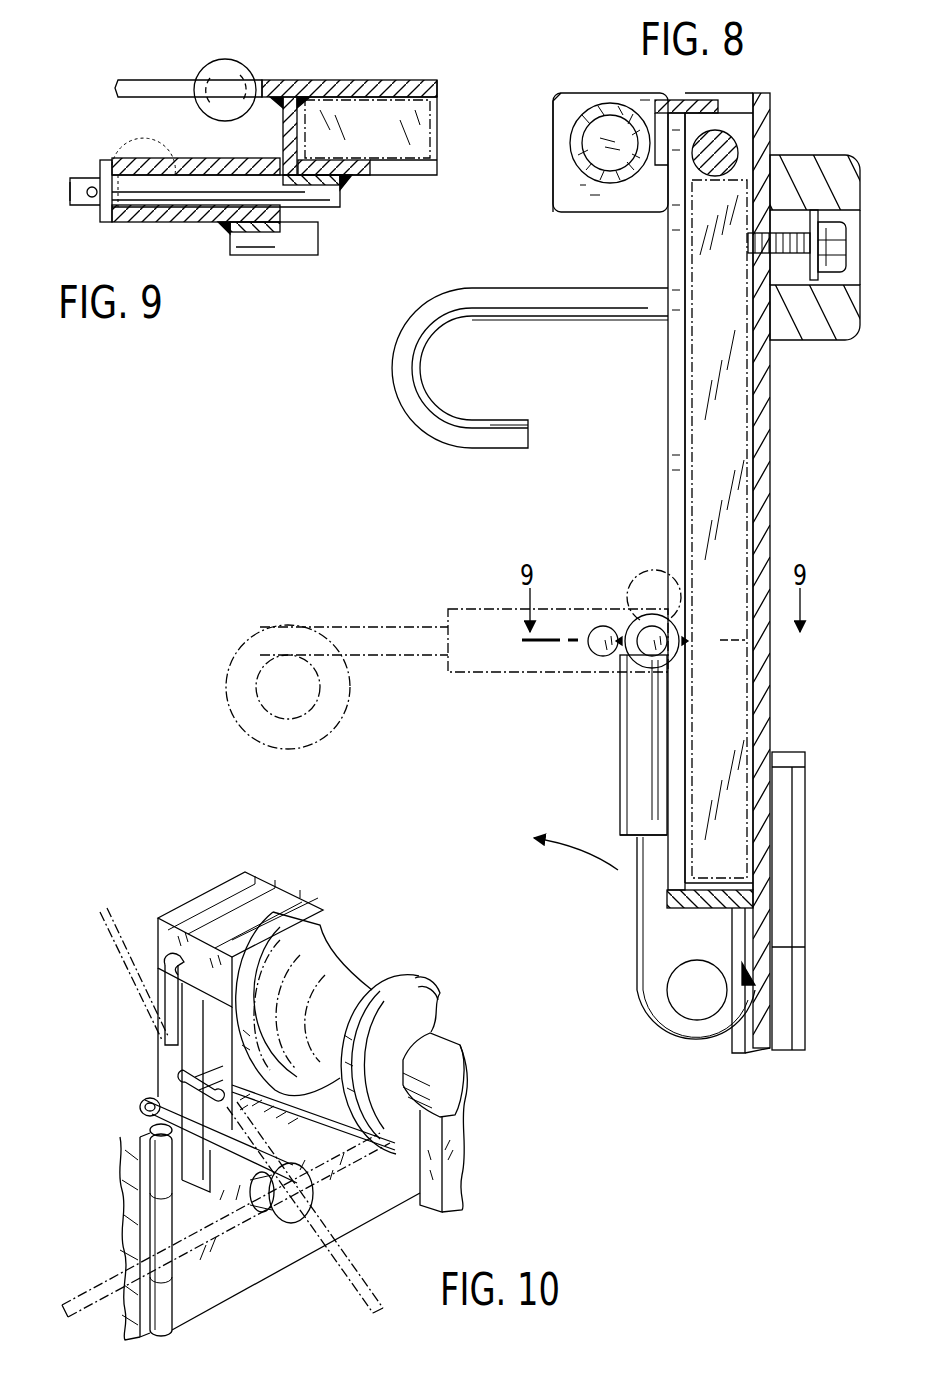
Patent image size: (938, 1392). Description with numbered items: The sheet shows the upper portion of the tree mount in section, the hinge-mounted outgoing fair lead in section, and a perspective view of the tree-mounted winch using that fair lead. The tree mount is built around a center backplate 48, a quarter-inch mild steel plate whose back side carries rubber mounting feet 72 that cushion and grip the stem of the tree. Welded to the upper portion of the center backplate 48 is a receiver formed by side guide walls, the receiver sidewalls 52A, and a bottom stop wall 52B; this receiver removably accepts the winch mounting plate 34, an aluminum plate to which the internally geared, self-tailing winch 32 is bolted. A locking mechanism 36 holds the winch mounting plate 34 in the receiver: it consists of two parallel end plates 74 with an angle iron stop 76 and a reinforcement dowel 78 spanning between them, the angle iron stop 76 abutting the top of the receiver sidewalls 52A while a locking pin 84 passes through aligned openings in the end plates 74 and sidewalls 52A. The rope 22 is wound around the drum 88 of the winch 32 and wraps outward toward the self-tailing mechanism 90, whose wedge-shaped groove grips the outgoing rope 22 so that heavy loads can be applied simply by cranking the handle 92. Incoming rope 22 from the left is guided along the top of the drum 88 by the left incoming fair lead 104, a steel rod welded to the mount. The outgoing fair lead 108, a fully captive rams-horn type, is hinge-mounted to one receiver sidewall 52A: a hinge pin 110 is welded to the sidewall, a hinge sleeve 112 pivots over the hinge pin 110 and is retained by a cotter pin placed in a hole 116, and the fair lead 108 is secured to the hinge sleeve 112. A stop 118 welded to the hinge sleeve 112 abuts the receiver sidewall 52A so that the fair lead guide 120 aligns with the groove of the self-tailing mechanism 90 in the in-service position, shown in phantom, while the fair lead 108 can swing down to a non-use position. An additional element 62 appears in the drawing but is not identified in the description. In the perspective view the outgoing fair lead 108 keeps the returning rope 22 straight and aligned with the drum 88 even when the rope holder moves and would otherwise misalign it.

In FIG. 10, the rope 22 is at (133, 993).
In FIG. 10, the winch 32 is at (347, 993).
In FIG. 9, the winch mounting plate 34 is at (360, 112).
In FIG. 8, the winch mounting plate 34 is at (735, 395).
In FIG. 8, the locking mechanism 36 is at (562, 112).
In FIG. 10, the locking mechanism 36 is at (220, 890).
In FIG. 9, the center backplate 48 is at (328, 83).
In FIG. 8, the center backplate 48 is at (763, 462).
In FIG. 10, the center backplate 48 is at (262, 1265).
In FIG. 9, the receiver sidewalls 52A is at (287, 133).
In FIG. 8, the receiver sidewalls 52A is at (678, 232).
In FIG. 8, the bottom stop wall 52B is at (720, 897).
In FIG. 9, the rod 62 is at (225, 62).
In FIG. 10, the rod 62 is at (170, 1333).
In FIG. 8, the rubber mounting feet 72 is at (840, 185).
In FIG. 8, the end plates 74 is at (565, 197).
In FIG. 8, the angle iron stop 76 is at (680, 108).
In FIG. 8, the reinforcement dowel 78 is at (617, 180).
In FIG. 8, the locking pin 84 is at (718, 156).
In FIG. 10, the drum 88 is at (363, 993).
In FIG. 10, the self-tailing mechanism 90 is at (413, 980).
In FIG. 10, the handle 92 is at (452, 1157).
In FIG. 8, the left incoming fair lead 104 is at (407, 356).
In FIG. 9, the outgoing fair lead 108 is at (125, 207).
In FIG. 8, the outgoing fair lead 108 is at (652, 972).
In FIG. 10, the outgoing fair lead 108 is at (305, 1193).
In FIG. 9, the hinge pin 110 is at (330, 198).
In FIG. 8, the hinge pin 110 is at (648, 632).
In FIG. 9, the hinge sleeve 112 is at (190, 222).
In FIG. 8, the hinge sleeve 112 is at (637, 618).
In FIG. 9, the hole 116 is at (68, 188).
In FIG. 9, the stop 118 is at (290, 247).
In FIG. 8, the stop 118 is at (600, 630).
In FIG. 8, the fair lead guide 120 is at (258, 688).